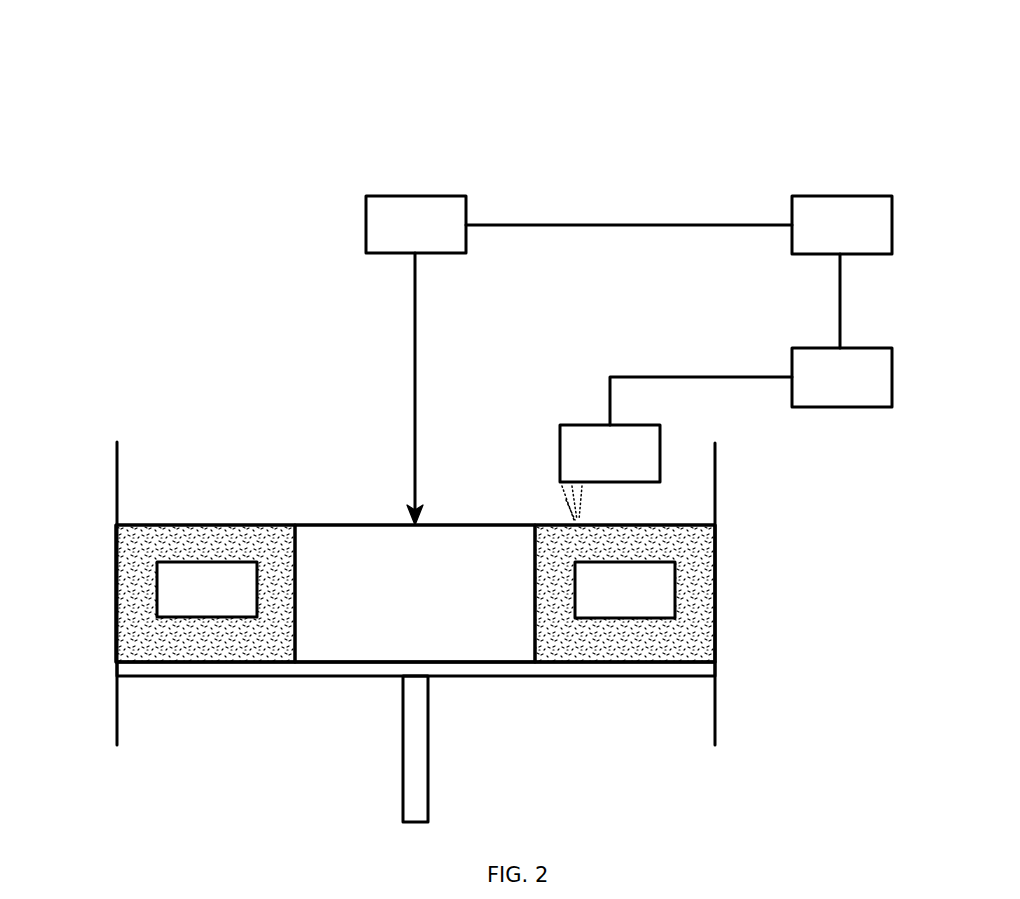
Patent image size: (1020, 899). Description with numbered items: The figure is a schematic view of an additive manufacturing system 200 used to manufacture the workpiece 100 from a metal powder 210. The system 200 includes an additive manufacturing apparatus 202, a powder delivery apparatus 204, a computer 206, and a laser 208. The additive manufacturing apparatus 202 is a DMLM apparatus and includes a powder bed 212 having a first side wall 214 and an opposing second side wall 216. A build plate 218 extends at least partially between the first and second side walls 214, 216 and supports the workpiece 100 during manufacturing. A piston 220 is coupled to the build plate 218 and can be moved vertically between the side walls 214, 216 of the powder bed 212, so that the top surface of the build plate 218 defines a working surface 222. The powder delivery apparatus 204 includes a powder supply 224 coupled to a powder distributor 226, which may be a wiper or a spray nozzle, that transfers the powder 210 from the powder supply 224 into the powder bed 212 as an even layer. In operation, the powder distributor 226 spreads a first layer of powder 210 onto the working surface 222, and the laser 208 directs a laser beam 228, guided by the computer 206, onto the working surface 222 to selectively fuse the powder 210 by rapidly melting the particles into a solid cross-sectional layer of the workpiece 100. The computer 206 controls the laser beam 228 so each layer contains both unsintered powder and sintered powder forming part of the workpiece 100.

The additive manufacturing system 200 is at (203, 85).
The additive manufacturing apparatus 202 is at (314, 428).
The powder delivery apparatus 204 is at (631, 358).
The computer 206 is at (892, 225).
The laser 208 is at (366, 224).
The metal powder 210 is at (228, 600).
The powder bed 212 is at (716, 553).
The first side wall 214 is at (116, 711).
The second side wall 216 is at (716, 703).
The build plate 218 is at (614, 672).
The piston 220 is at (428, 748).
The working surface 222 is at (572, 662).
The powder supply 224 is at (892, 377).
The powder distributor 226 is at (560, 452).
The laser beam 228 is at (415, 350).
The workpiece 100 is at (444, 594).